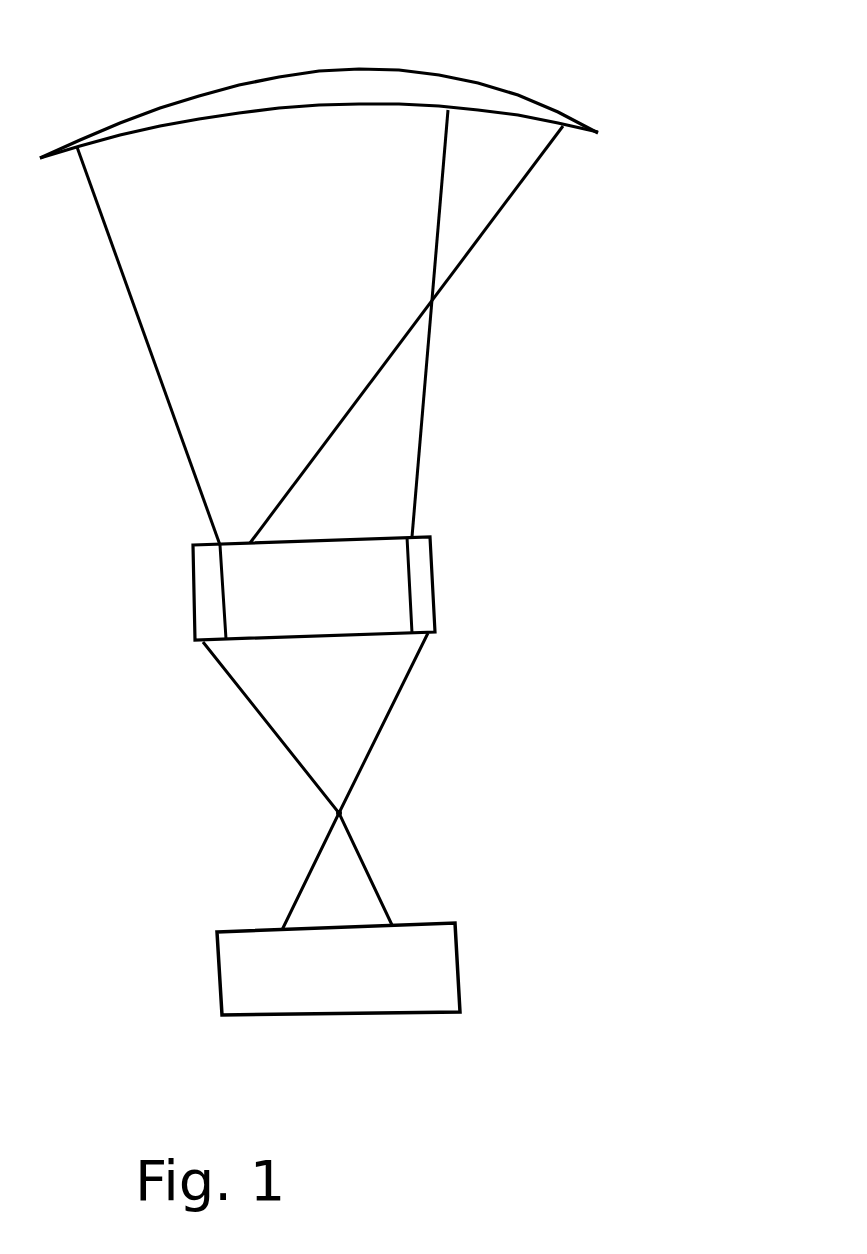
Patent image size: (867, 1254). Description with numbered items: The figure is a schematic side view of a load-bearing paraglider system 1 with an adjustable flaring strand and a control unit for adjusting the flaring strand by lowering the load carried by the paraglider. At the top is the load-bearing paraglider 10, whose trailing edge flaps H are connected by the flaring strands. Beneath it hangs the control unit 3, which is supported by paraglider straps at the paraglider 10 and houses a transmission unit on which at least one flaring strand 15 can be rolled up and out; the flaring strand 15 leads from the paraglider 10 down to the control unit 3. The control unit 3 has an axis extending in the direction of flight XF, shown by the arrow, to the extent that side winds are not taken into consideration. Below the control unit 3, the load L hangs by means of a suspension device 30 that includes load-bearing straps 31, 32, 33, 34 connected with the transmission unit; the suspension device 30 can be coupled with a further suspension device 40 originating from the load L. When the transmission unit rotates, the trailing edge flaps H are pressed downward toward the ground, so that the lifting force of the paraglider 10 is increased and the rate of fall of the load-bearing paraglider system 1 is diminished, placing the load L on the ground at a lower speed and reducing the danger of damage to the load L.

The load-bearing paraglider system 1 is at (505, 417).
The load-bearing paraglider 10 is at (378, 80).
The trailing edge flaps H is at (543, 108).
The flaring strand 15 is at (495, 220).
The control unit 3 is at (464, 559).
The suspension device 30 is at (519, 768).
The load-bearing strap 31 is at (296, 783).
The load-bearing strap 32 is at (262, 722).
The load-bearing strap 33 is at (413, 781).
The load-bearing strap 34 is at (403, 682).
The further suspension device 40 is at (445, 860).
The load L is at (447, 965).
The direction of flight XF is at (822, 942).